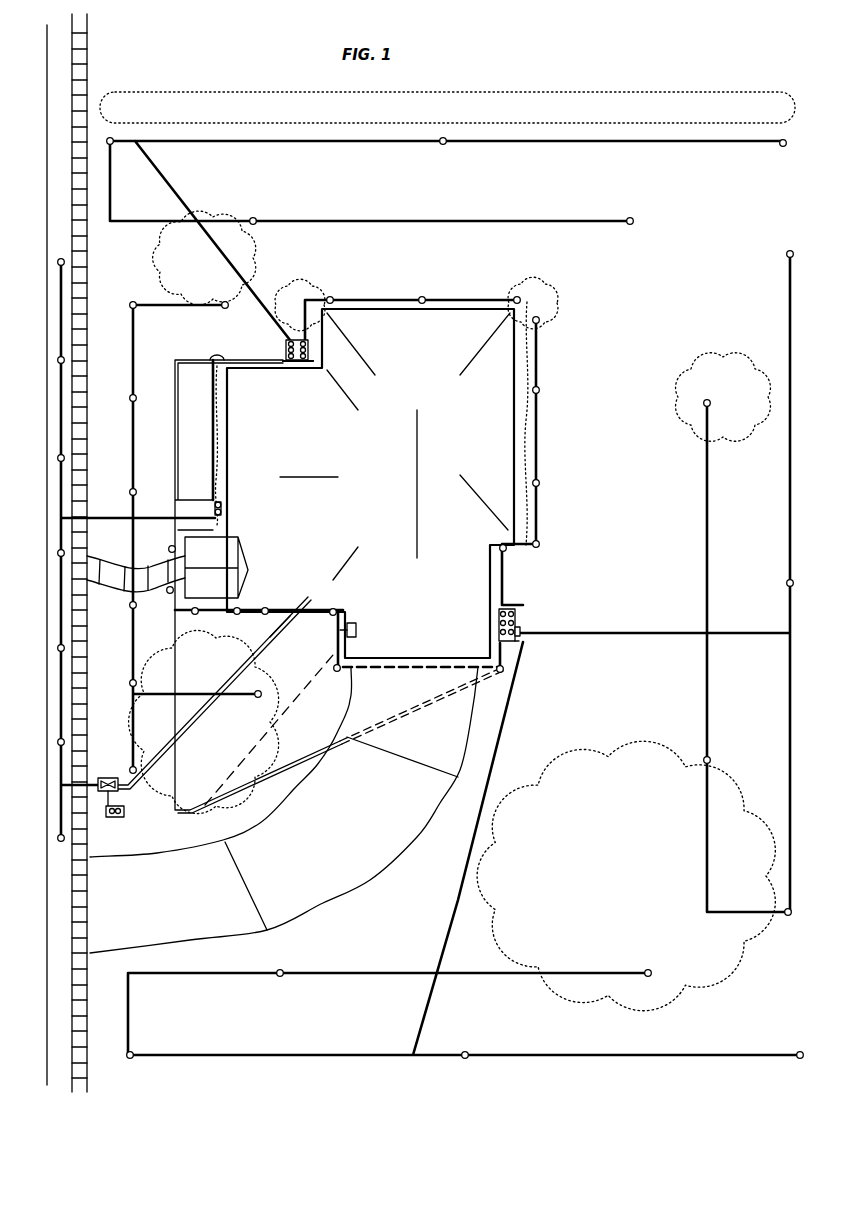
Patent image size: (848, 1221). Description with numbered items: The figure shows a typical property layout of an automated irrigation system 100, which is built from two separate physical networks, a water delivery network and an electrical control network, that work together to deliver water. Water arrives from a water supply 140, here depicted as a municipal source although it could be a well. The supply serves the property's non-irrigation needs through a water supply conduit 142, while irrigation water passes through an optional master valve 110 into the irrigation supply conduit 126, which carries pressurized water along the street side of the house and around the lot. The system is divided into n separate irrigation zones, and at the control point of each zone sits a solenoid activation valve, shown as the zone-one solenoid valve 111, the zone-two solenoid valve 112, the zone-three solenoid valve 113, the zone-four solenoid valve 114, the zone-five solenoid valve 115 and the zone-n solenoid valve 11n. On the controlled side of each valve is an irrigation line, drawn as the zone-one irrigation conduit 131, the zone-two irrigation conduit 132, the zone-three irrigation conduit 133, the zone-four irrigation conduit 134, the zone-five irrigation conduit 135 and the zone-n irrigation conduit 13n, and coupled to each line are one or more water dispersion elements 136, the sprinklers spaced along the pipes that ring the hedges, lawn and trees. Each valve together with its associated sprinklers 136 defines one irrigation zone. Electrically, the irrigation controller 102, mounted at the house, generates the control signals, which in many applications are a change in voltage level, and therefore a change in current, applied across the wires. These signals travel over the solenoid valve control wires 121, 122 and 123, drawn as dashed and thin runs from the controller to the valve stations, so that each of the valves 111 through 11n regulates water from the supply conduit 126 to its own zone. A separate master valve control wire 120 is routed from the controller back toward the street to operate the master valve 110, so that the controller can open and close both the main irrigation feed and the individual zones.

The automated irrigation system 100 is at (577, 70).
The irrigation controller 102 is at (356, 630).
The master valve 110 is at (116, 817).
The solenoid valve zone 1 111 is at (520, 602).
The solenoid valve zone 2 112 is at (518, 624).
The solenoid valve zone 3 113 is at (518, 644).
The solenoid valve zone 4 114 is at (222, 507).
The solenoid valve zone 5 115 is at (286, 344).
The solenoid valve zone n 11n is at (310, 356).
The master valve control wire 120 is at (286, 712).
The solenoid valve control wire 121 is at (388, 668).
The solenoid valve control wire 122 is at (236, 612).
The solenoid valve control wire 123 is at (216, 357).
The irrigation supply conduit 126 is at (172, 360).
The irrigation conduit zone 1 131 is at (538, 352).
The irrigation conduit zone 2 132 is at (518, 688).
The irrigation conduit zone 3 133 is at (707, 460).
The irrigation conduit zone 4 134 is at (61, 502).
The irrigation conduit zone 5 135 is at (170, 173).
The water dispersion elements (sprinklers) 136 is at (112, 146).
The irrigation conduit zone n 13n is at (374, 298).
The water supply 140 is at (108, 776).
The water supply conduit 142 is at (262, 642).